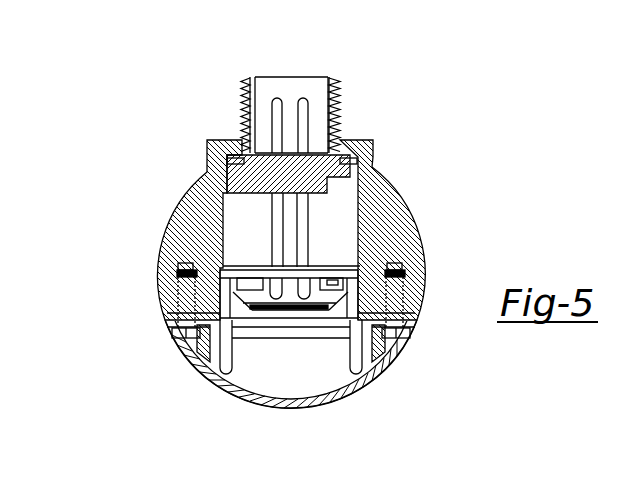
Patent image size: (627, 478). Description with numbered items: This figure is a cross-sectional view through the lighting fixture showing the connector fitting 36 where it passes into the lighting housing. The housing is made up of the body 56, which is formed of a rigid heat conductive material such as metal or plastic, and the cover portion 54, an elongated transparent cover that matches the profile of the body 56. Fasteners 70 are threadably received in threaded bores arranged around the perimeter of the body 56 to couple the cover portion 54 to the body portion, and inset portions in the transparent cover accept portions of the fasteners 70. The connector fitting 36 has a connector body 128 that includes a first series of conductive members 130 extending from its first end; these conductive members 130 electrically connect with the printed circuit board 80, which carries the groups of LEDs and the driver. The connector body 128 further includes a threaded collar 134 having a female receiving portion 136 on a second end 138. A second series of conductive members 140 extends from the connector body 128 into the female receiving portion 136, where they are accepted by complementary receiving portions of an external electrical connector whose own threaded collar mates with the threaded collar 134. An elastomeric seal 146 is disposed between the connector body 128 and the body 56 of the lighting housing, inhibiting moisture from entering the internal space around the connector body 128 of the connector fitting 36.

The cover portion 54 is at (250, 397).
The body 56 is at (382, 202).
The threaded collar 134 is at (342, 88).
The connector fitting 36 is at (334, 116).
The female receiving portion 136 is at (254, 88).
The second end 138 is at (329, 78).
The second series of conductive members 140 is at (303, 100).
The conductive members 130 is at (307, 241).
The connector body 128 is at (268, 181).
The elastomeric seal 146 is at (345, 162).
The printed circuit board 80 is at (250, 274).
The fasteners 70 is at (178, 293).